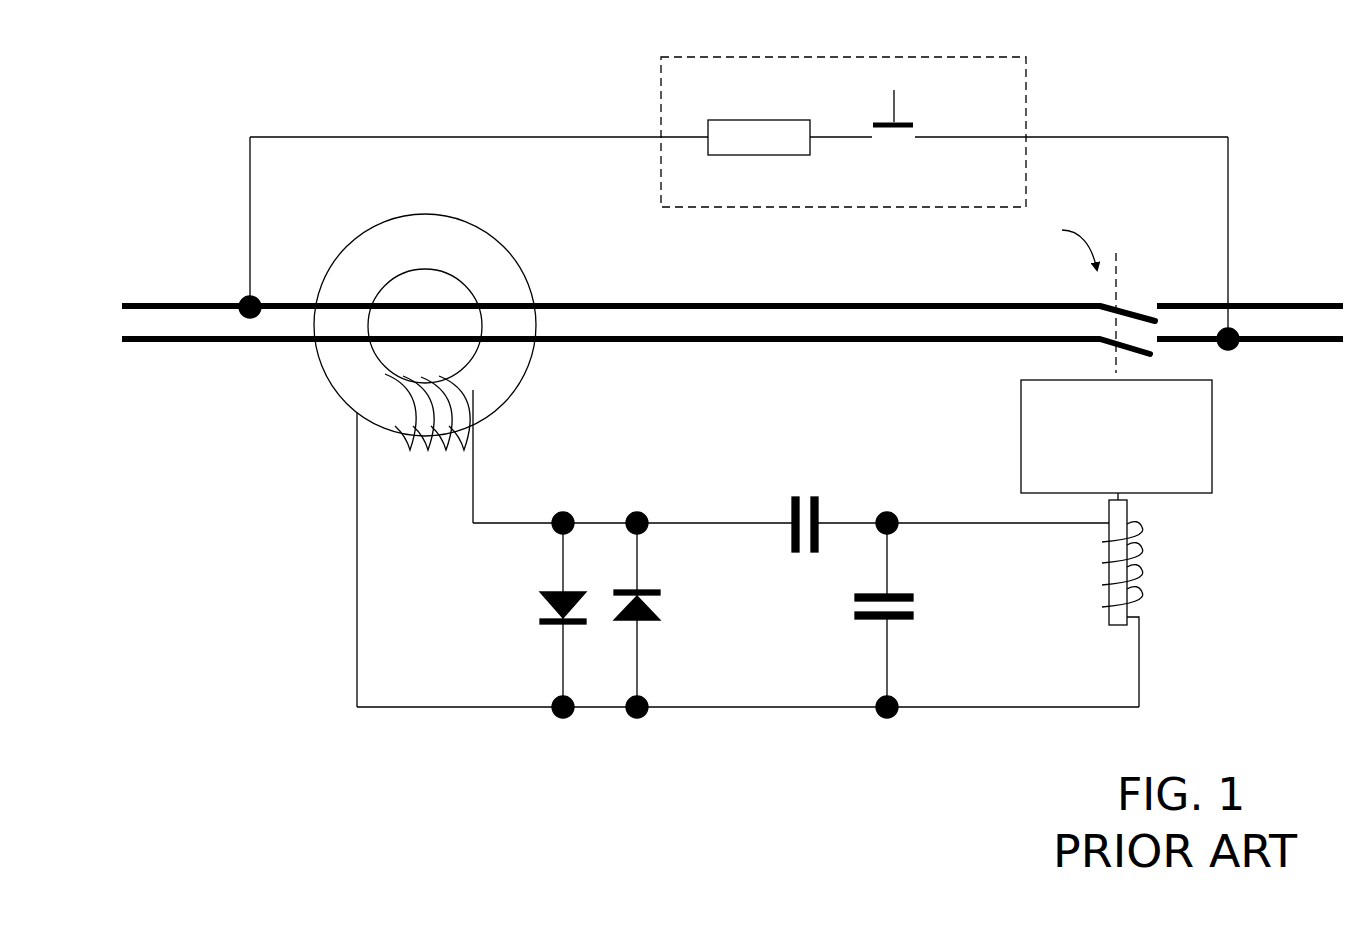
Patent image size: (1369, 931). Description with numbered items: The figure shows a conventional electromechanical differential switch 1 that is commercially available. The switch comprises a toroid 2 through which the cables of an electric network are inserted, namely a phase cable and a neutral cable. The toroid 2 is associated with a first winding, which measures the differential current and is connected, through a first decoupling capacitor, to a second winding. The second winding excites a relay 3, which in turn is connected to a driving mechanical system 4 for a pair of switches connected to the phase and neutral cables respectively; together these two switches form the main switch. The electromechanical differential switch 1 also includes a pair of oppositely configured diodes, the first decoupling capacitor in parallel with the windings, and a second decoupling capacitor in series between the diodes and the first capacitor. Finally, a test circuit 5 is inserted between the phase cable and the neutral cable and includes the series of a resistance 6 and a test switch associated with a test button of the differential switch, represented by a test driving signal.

The electromechanical differential switch 1 is at (377, 112).
The toroid 2 is at (487, 253).
The relay 3 is at (1162, 590).
The driving mechanical system 4 is at (1191, 437).
The test circuit 5 is at (1013, 90).
The resistance 6 is at (755, 137).